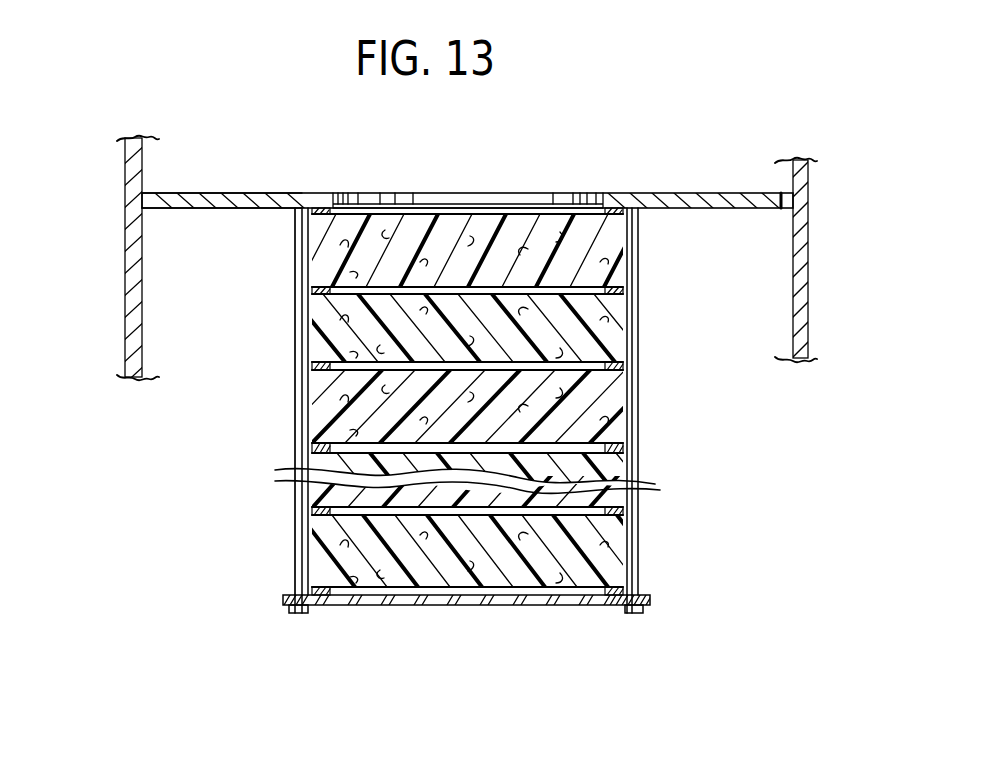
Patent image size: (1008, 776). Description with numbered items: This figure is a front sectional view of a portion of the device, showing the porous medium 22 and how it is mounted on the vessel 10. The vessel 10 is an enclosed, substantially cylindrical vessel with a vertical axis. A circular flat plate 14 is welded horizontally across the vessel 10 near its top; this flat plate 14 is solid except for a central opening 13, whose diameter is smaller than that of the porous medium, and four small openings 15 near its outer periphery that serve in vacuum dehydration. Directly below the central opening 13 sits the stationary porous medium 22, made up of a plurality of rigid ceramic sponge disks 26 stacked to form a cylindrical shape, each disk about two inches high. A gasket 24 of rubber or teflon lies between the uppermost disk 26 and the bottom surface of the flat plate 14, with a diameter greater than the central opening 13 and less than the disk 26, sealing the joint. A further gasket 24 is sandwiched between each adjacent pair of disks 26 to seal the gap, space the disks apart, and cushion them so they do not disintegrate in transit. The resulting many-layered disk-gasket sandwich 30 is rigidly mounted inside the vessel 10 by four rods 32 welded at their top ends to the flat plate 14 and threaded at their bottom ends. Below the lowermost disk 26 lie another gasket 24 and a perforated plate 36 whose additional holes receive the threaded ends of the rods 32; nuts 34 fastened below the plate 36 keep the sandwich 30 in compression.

The vessel 10 is at (125, 275).
The central opening 13 is at (602, 208).
The flat plate 14 is at (688, 193).
The small openings 15 is at (148, 190).
The porous medium 22 is at (595, 333).
The gasket 24 is at (322, 209).
The ceramic sponge disk 26 is at (322, 312).
The ceramic disk-gasket sandwich 30 is at (262, 316).
The rod 32 is at (640, 310).
The nut 34 is at (290, 615).
The perforated plate 36 is at (652, 600).